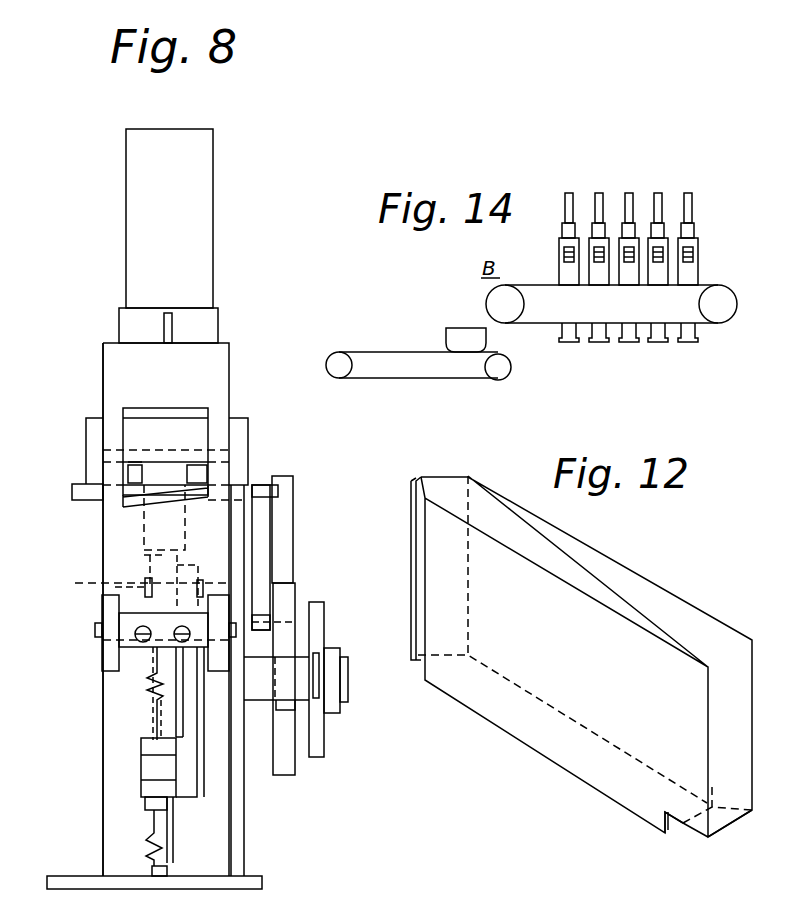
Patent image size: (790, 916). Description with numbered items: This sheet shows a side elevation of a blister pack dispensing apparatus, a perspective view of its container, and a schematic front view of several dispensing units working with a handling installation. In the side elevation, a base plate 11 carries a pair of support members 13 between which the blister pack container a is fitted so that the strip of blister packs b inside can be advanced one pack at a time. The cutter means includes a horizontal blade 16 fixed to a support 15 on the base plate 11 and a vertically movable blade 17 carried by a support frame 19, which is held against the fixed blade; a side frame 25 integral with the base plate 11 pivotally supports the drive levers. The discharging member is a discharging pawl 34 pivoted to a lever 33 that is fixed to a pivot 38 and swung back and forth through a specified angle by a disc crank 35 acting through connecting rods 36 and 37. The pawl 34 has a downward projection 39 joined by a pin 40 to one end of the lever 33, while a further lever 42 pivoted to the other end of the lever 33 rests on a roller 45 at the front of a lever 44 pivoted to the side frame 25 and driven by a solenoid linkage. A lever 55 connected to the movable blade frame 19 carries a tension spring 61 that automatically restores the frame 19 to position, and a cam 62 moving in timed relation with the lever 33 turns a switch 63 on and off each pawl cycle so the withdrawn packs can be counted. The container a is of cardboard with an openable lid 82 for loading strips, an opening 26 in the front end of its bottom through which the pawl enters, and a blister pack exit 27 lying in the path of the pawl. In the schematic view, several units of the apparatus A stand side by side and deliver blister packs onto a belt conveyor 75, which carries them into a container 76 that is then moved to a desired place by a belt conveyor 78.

In FIG. 8, the blister pack container a is at (208, 259).
In FIG. 12, the blister pack container a is at (693, 612).
In FIG. 8, the strip of blister packs b is at (131, 462).
In FIG. 8, the base plate 11 is at (72, 491).
In FIG. 8, the support member 13 is at (212, 332).
In FIG. 8, the support 15 is at (243, 434).
In FIG. 8, the horizontal blade 16 is at (176, 461).
In FIG. 8, the vertically movable blade 17 is at (200, 500).
In FIG. 8, the support frame 19 is at (103, 543).
In FIG. 8, the side frame 25 is at (245, 829).
In FIG. 12, the opening 26 is at (680, 830).
In FIG. 12, the blister pack exit 27 is at (725, 830).
In FIG. 8, the lever 33 is at (206, 716).
In FIG. 8, the discharging pawl 34 is at (164, 477).
In FIG. 8, the disc crank 35 is at (287, 776).
In FIG. 8, the connecting rod 36 is at (265, 524).
In FIG. 8, the connecting rod 37 is at (288, 566).
In FIG. 8, the pivot 38 is at (262, 701).
In FIG. 8, the projection 39 is at (150, 556).
In FIG. 8, the pin 40 is at (145, 583).
In FIG. 8, the lever 42 is at (141, 765).
In FIG. 8, the lever 44 is at (162, 859).
In FIG. 8, the roller 45 is at (145, 805).
In FIG. 8, the lever 55 is at (102, 659).
In FIG. 8, the tension spring 61 is at (152, 697).
In FIG. 8, the cam 62 is at (325, 624).
In FIG. 8, the switch 63 is at (319, 668).
In FIG. 14, the belt conveyor 75 is at (540, 284).
In FIG. 14, the container 76 is at (455, 328).
In FIG. 14, the belt conveyor 78 is at (380, 342).
In FIG. 12, the lid 82 is at (434, 483).
In FIG. 14, the apparatus A is at (584, 205).